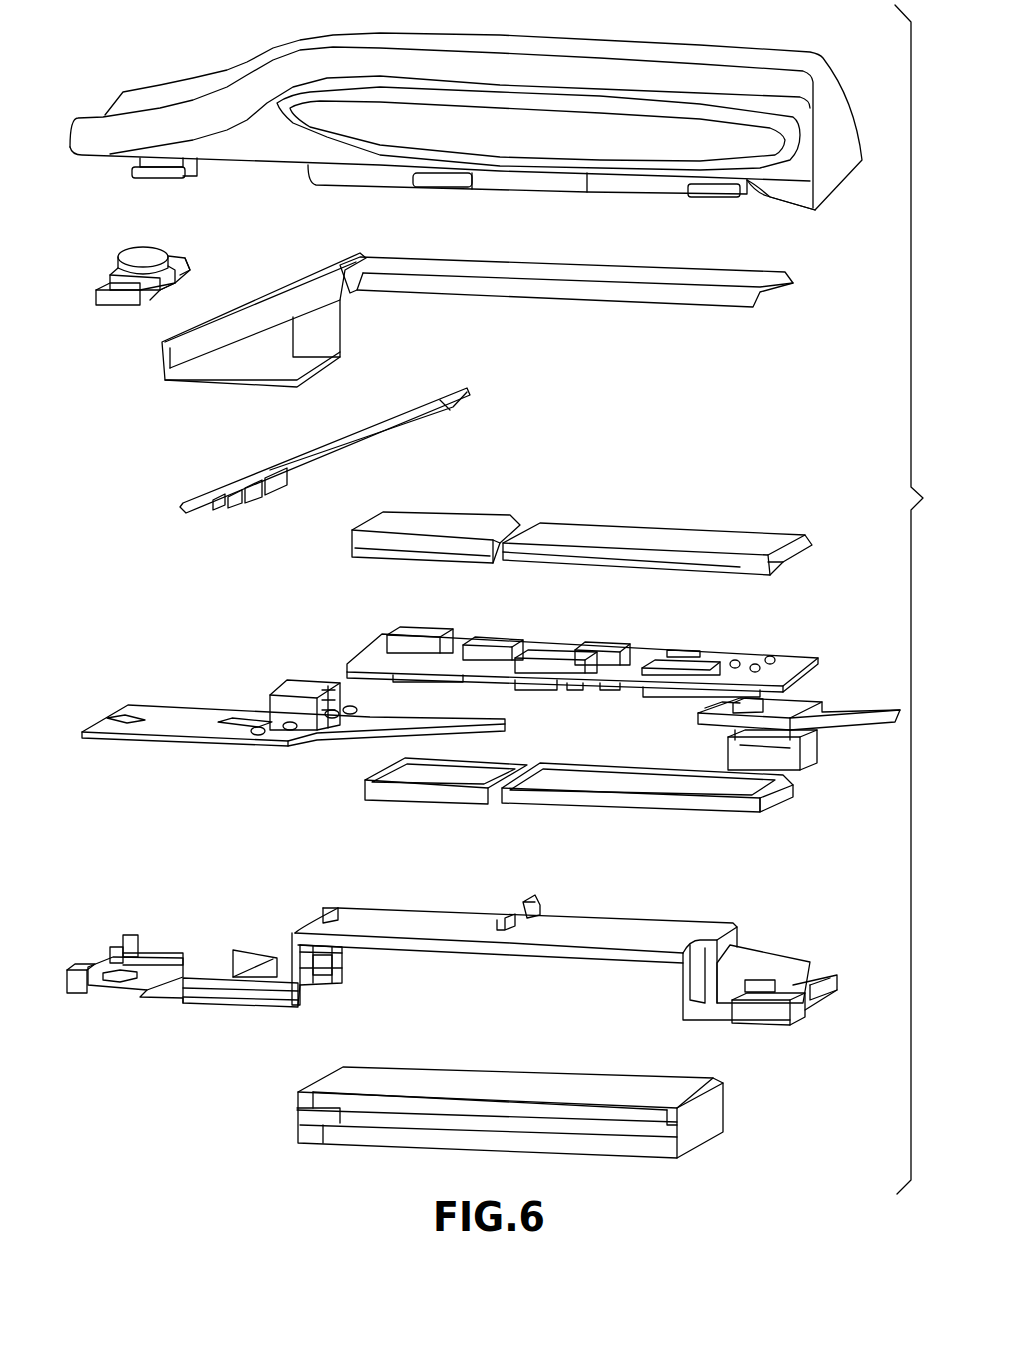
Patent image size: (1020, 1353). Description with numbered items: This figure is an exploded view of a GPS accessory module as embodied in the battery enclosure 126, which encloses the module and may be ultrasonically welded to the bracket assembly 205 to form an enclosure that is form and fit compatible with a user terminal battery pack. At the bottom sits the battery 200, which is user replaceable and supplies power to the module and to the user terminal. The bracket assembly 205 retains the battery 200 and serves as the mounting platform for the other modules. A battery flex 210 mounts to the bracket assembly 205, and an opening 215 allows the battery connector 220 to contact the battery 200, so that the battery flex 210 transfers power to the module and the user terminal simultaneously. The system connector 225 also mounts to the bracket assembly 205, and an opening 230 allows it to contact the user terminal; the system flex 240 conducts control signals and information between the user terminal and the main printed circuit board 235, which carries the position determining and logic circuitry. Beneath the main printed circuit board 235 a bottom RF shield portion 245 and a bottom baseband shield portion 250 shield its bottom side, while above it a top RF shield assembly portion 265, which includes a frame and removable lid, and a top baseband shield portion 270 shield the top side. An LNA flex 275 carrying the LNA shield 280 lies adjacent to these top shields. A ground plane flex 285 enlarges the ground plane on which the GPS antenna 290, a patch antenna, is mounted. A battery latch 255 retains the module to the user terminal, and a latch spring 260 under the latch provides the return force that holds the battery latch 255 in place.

The battery enclosure 126 is at (858, 128).
The battery 200 is at (297, 1098).
The bracket assembly 205 is at (402, 916).
The battery flex 210 is at (225, 748).
The opening 215 is at (322, 962).
The battery connector 220 is at (305, 681).
The system connector 225 is at (808, 746).
The opening 230 is at (815, 1008).
The main printed circuit board 235 is at (745, 648).
The system flex 240 is at (793, 706).
The bottom RF shield portion 245 is at (390, 796).
The bottom baseband shield portion 250 is at (715, 810).
The battery latch 255 is at (143, 254).
The latch spring 260 is at (165, 288).
The top RF shield assembly portion 265 is at (358, 560).
The top baseband shield portion 270 is at (795, 528).
The LNA flex 275 is at (440, 403).
The LNA shield 280 is at (265, 490).
The ground plane flex 285 is at (755, 276).
The GPS antenna 290 is at (165, 353).